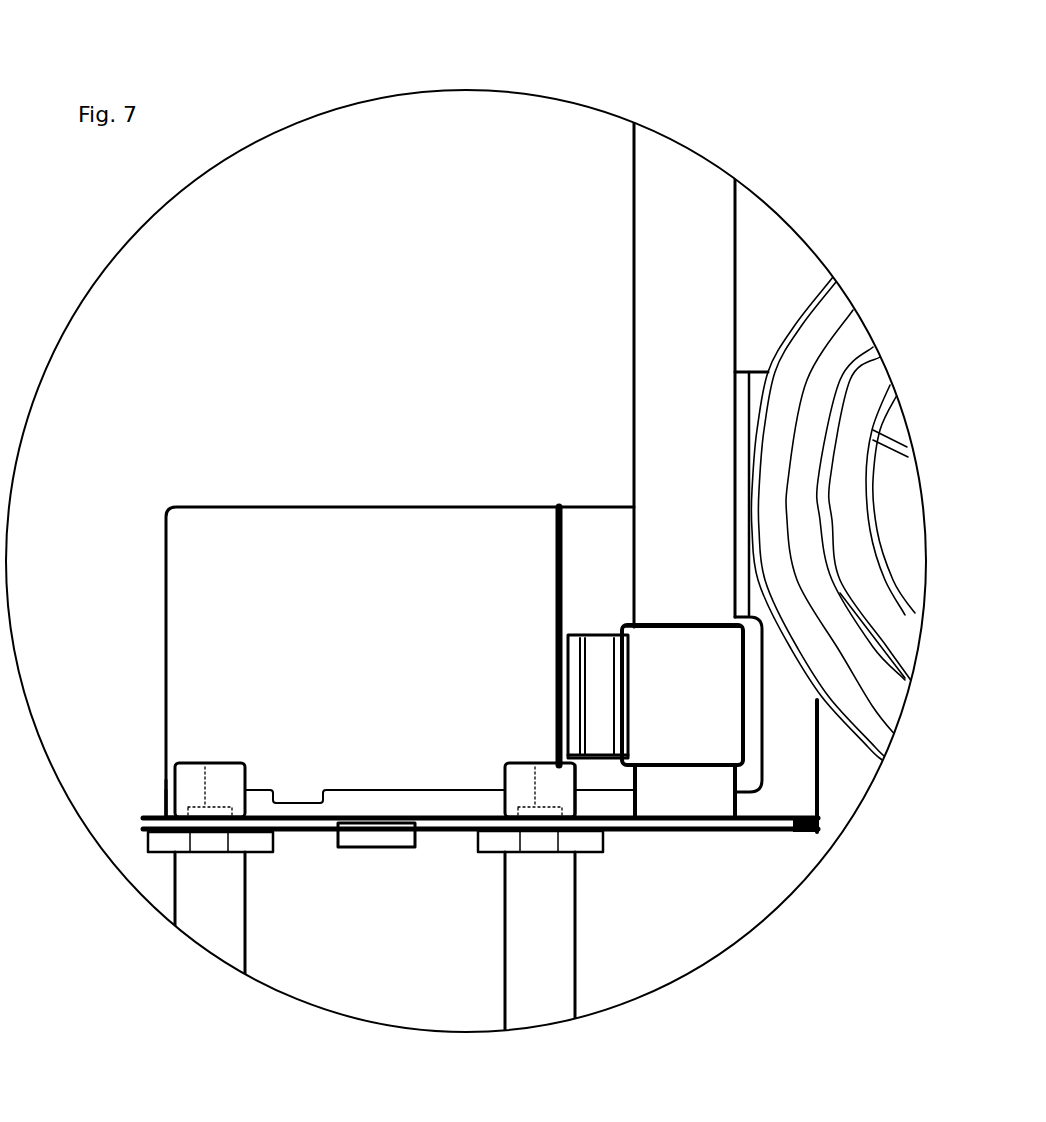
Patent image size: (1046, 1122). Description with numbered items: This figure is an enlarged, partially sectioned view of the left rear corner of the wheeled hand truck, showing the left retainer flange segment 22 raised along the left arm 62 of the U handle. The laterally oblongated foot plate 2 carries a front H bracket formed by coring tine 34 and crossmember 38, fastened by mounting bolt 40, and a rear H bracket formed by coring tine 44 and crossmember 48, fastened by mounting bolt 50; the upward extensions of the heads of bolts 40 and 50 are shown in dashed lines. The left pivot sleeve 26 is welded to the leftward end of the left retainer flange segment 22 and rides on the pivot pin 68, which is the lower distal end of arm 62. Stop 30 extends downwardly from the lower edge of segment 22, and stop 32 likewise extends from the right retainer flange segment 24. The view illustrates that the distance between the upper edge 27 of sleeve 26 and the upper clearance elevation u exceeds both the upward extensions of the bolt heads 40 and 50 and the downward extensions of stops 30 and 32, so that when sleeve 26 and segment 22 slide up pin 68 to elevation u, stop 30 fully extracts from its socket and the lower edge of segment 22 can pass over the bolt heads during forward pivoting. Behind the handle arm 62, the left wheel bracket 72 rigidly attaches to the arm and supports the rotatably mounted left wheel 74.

The foot plate 2 is at (436, 830).
The left retainer flange segment 22 is at (252, 540).
The right retainer flange segment 24 is at (165, 800).
The left pivot sleeve 26 is at (713, 717).
The upper edge of sleeve 27 is at (697, 632).
The stop 30 is at (305, 795).
The stop 32 is at (315, 838).
The coring tine 34 is at (188, 907).
The crossmember 38 is at (165, 842).
The mounting bolt 40 is at (207, 763).
The coring tine 44 is at (565, 965).
The crossmember 48 is at (580, 843).
The mounting bolt 50 is at (540, 790).
The left arm 62 is at (663, 192).
The pivot pin 68 is at (712, 568).
The left wheel bracket 72 is at (755, 367).
The left wheel 74 is at (833, 367).
The upper clearance elevation u is at (683, 627).